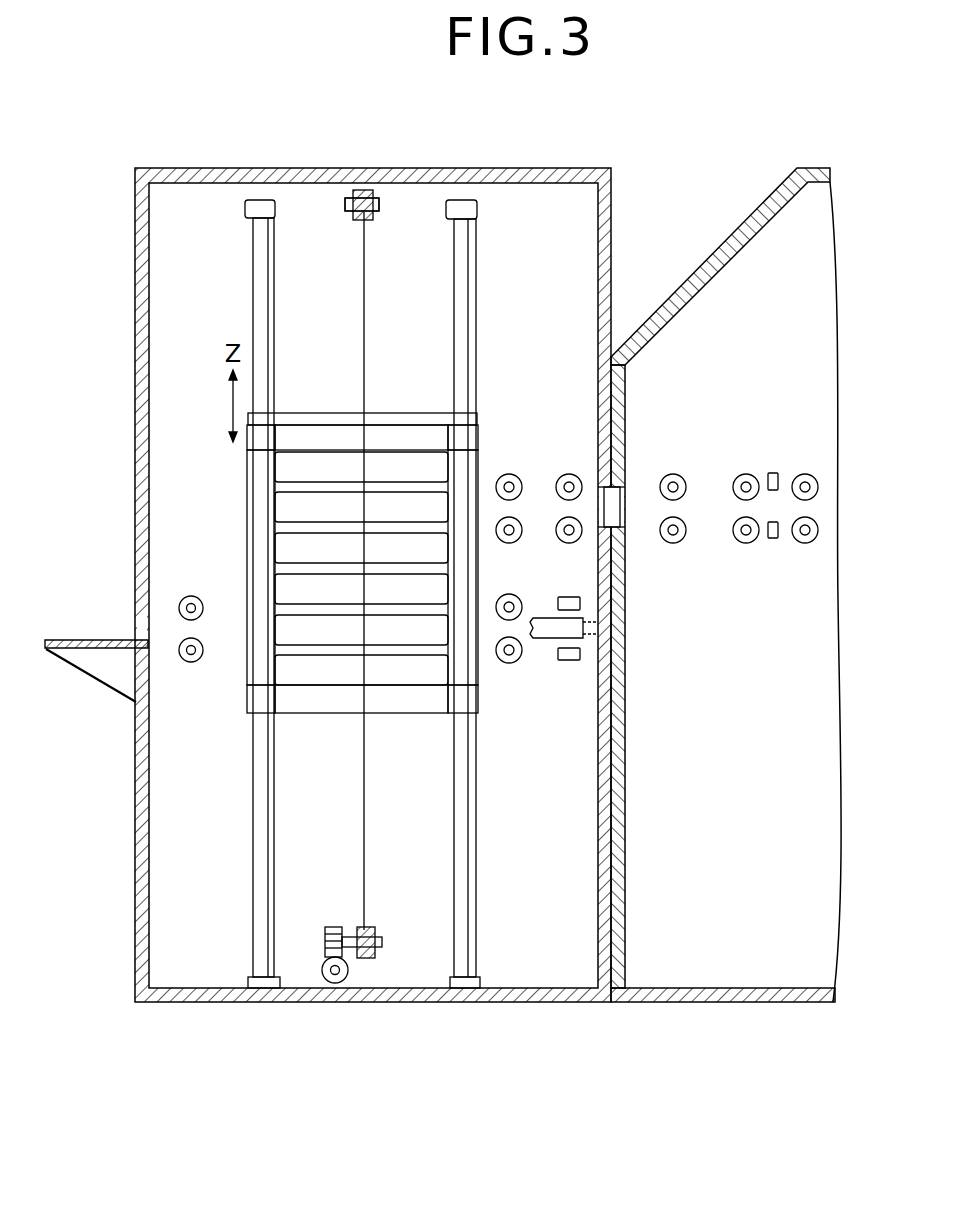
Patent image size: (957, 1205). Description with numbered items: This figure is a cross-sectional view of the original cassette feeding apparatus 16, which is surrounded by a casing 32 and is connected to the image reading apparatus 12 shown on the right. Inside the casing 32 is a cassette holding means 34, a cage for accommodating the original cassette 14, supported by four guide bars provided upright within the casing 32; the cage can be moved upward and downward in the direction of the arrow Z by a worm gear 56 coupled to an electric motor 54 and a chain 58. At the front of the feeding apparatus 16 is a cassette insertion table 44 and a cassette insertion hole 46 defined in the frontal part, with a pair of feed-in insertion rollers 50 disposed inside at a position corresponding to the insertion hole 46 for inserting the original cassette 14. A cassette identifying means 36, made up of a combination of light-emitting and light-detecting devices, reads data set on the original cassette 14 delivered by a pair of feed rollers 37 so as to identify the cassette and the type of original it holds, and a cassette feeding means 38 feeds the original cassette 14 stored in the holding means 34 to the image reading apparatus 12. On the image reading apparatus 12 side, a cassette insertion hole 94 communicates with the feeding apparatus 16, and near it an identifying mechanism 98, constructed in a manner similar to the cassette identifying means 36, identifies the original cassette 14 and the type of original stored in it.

The image reading apparatus 12 is at (750, 972).
The original cassette 14 is at (270, 641).
The original cassette feeding apparatus 16 is at (128, 947).
The casing 32 is at (490, 992).
The cassette holding means 34 is at (396, 728).
The cassette identifying means 36 is at (586, 594).
The feed rollers 37 is at (510, 663).
The cassette feeding means 38 is at (547, 472).
The cassette insertion table 44 is at (85, 652).
The cassette insertion hole 46 is at (135, 630).
The insertion rollers 50 is at (191, 596).
The electric motor 54 is at (340, 982).
The worm gear 56 is at (342, 922).
The chain 58 is at (366, 852).
The cassette insertion hole 94 is at (622, 513).
The identifying mechanism 98 is at (777, 472).